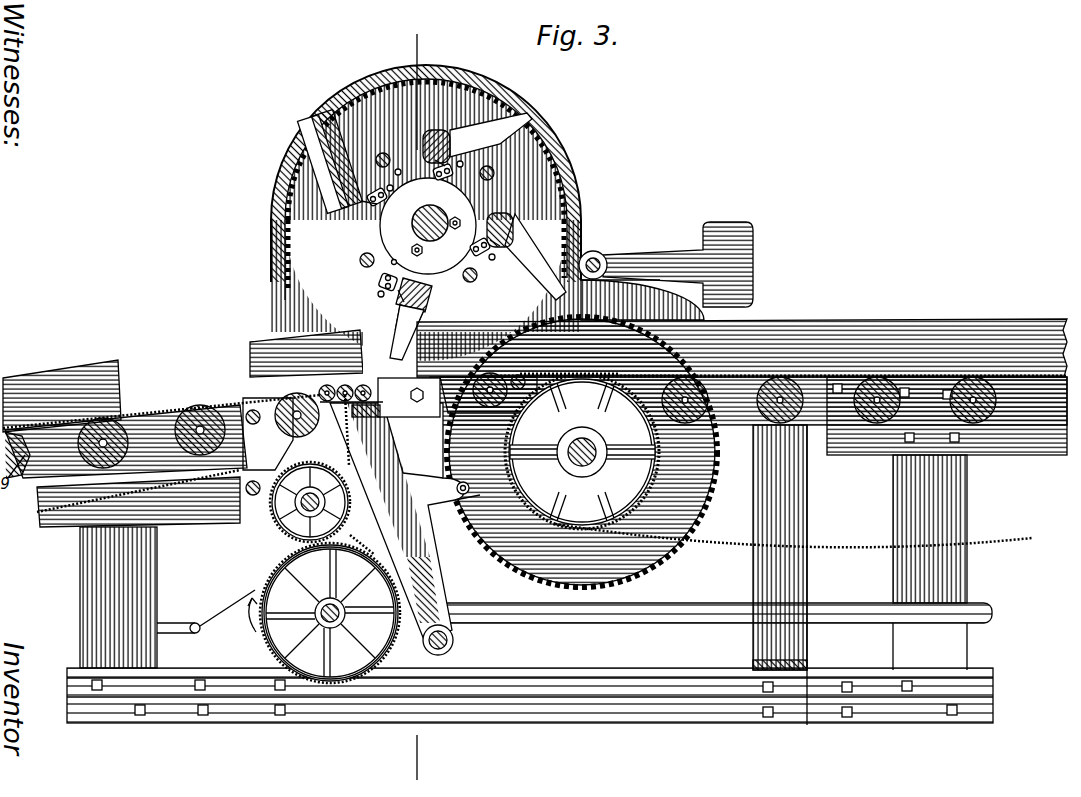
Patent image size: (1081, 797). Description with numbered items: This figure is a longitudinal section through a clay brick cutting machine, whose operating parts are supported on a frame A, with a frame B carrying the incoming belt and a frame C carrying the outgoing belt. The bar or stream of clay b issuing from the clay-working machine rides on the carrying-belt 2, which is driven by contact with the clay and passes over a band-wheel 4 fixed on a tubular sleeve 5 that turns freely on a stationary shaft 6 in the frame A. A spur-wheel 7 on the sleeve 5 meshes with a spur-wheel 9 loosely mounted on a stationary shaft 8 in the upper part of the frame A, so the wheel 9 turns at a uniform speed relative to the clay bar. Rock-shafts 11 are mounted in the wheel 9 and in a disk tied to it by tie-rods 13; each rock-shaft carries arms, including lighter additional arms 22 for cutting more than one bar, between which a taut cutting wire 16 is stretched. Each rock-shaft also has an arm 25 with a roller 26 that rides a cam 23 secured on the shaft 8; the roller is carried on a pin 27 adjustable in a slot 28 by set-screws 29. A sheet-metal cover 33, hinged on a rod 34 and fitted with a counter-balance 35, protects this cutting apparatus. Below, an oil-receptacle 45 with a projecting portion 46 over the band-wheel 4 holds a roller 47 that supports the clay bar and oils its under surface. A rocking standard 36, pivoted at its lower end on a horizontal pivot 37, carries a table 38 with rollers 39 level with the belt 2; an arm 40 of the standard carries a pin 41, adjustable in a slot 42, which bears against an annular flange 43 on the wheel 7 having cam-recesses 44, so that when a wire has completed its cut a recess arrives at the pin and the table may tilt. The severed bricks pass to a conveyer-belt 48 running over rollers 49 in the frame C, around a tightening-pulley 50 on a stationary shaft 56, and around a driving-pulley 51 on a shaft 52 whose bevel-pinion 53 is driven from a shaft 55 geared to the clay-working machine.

The carrying-belt 2 is at (1028, 374).
The band-wheel 4 is at (416, 397).
The tubular shaft or sleeve 5 is at (572, 476).
The stationary shaft 6 is at (582, 450).
The spur-wheel 7 is at (690, 505).
The stationary shaft 8 is at (449, 217).
The spur-wheel 9 is at (572, 209).
The rock-shafts 11 is at (433, 136).
The tie-rods 13 is at (386, 156).
The wire 16 is at (337, 341).
The additional arms 22 is at (325, 128).
The cam 23 is at (445, 262).
The arm 25 is at (448, 165).
The roller 26 is at (394, 259).
The pin 27 is at (388, 199).
The slot 28 is at (440, 190).
The set-screws 29 is at (466, 164).
The cover 33 is at (574, 172).
The rod 34 is at (604, 258).
The counter-balance 35 is at (756, 250).
The oscillating or rocking standard 36 is at (410, 527).
The horizontal pivot 37 is at (455, 640).
The table 38 is at (395, 400).
The rollers 39 is at (351, 401).
The arm 40 is at (440, 480).
The pin 41 is at (462, 496).
The slot 42 is at (478, 500).
The flange 43 is at (640, 472).
The cam-recesses 44 is at (640, 570).
The oil-receptacle 45 is at (421, 401).
The projecting portion 46 is at (520, 378).
The roller 47 is at (492, 372).
The conveyer-belt 48 is at (161, 431).
The rollers 49 is at (247, 446).
The tightening-pulley 50 is at (297, 527).
The driving-pulley 51 is at (340, 660).
The shaft 52 is at (372, 655).
The bevel-pinion 53 is at (340, 647).
The shaft 55 is at (684, 615).
The stationary shaft 56 is at (255, 497).
The frame A is at (450, 664).
The frame B is at (1000, 440).
The frame C is at (80, 530).
The bar or stream of clay b is at (880, 322).